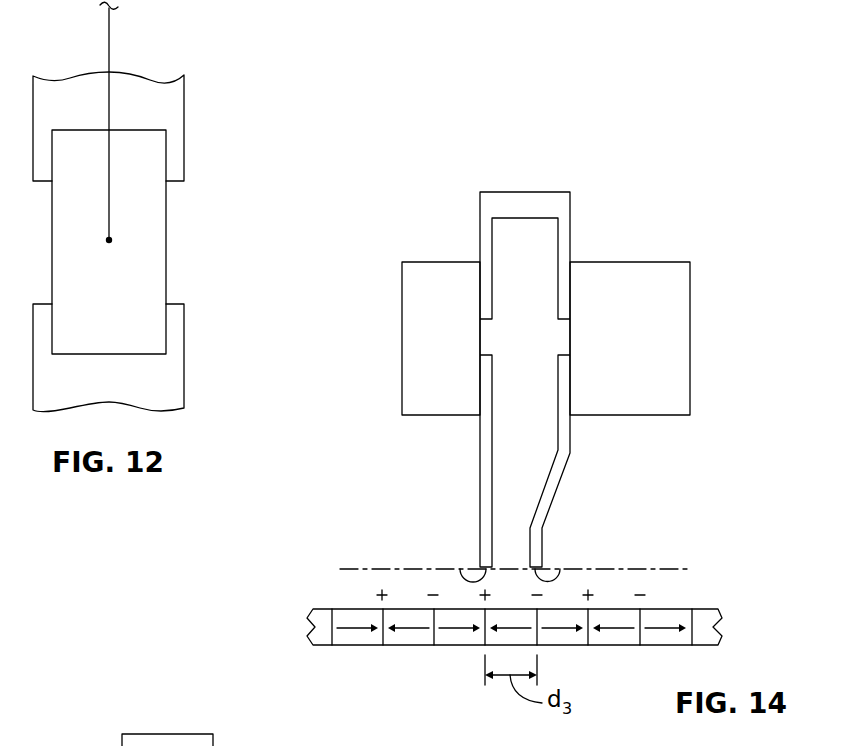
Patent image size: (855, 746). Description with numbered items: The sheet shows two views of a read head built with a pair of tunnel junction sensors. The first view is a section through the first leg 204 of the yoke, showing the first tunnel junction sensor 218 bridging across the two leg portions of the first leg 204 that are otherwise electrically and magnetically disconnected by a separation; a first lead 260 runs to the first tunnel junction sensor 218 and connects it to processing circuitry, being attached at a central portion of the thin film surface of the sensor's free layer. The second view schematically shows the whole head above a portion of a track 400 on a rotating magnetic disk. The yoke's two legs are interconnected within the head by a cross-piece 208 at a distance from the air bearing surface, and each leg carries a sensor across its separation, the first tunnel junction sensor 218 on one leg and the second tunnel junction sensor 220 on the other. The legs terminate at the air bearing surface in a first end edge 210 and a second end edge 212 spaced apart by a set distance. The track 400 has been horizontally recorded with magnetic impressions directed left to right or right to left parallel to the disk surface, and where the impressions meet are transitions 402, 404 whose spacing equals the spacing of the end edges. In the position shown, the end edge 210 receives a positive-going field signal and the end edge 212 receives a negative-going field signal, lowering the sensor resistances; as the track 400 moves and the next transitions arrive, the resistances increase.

In FIG. 12, the first leg 204 is at (177, 105).
In FIG. 12, the cross-piece 208 is at (153, 735).
In FIG. 14, the cross-piece 208 is at (510, 193).
In FIG. 14, the first end edge 210 is at (460, 569).
In FIG. 14, the second end edge 212 is at (560, 569).
In FIG. 12, the first tunnel junction sensor 218 is at (172, 233).
In FIG. 14, the first tunnel junction sensor 218 is at (424, 419).
In FIG. 14, the second tunnel junction sensor 220 is at (645, 419).
In FIG. 12, the first lead 260 is at (110, 35).
In FIG. 14, the track 400 is at (711, 604).
In FIG. 14, the transition 402 is at (484, 639).
In FIG. 14, the transition 404 is at (538, 639).